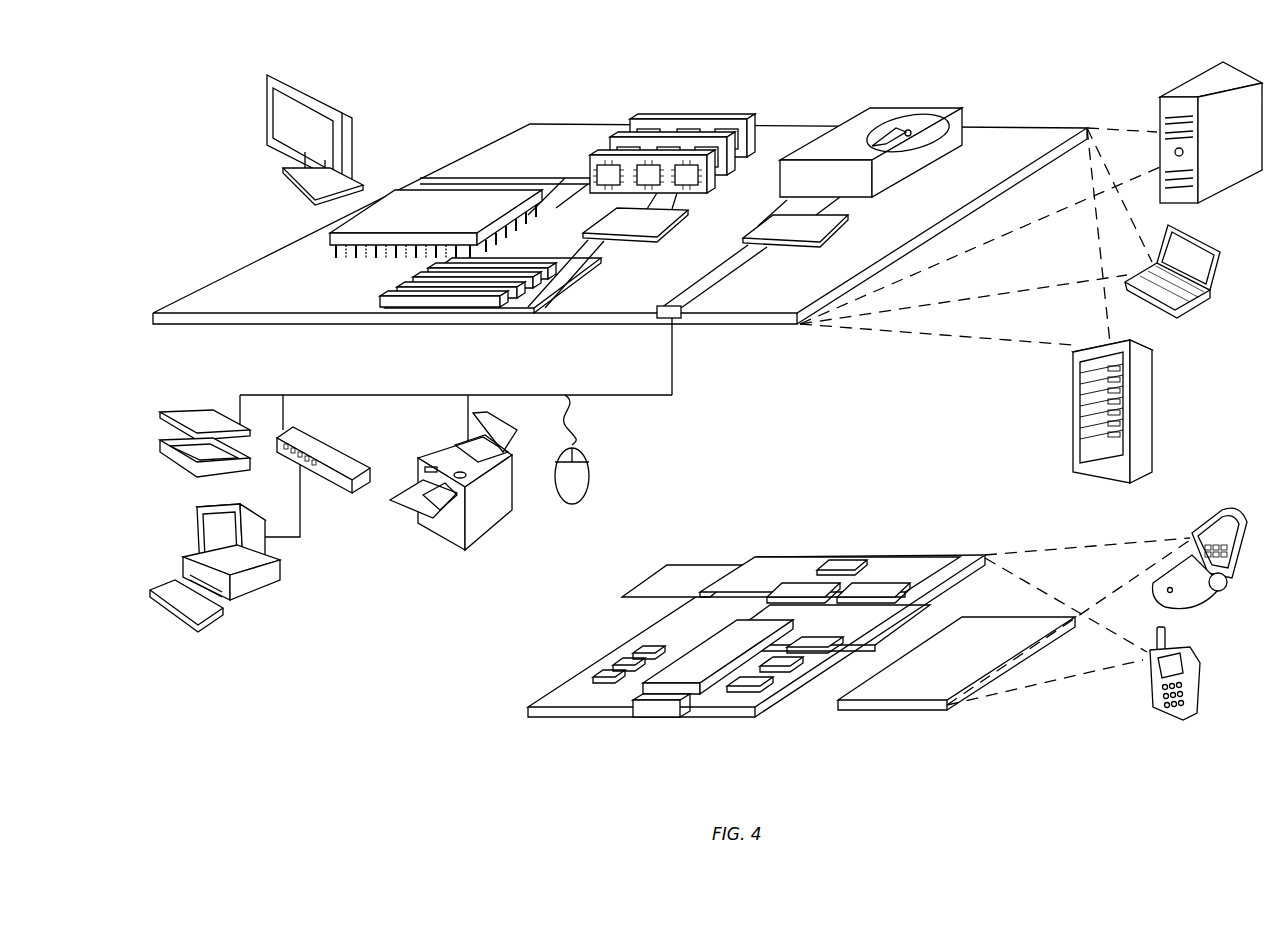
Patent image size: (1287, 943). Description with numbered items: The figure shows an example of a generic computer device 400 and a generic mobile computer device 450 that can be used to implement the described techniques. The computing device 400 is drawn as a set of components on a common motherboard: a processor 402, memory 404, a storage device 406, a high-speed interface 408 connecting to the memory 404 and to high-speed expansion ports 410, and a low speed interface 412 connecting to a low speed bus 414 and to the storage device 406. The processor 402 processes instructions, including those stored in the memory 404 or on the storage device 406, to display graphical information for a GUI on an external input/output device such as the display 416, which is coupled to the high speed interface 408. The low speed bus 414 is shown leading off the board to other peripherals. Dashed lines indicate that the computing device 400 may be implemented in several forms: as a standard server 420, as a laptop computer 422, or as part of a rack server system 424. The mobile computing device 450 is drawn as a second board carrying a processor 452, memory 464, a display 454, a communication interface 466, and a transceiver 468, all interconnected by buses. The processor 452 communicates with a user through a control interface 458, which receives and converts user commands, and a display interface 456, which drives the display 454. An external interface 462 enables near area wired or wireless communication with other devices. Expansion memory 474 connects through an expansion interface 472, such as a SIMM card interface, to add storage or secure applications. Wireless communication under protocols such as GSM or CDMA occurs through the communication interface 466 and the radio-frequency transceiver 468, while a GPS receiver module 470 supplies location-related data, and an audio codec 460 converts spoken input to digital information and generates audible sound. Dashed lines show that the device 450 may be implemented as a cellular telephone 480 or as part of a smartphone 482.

The computing device 400 is at (450, 94).
The processor 402 is at (337, 237).
The memory 404 is at (648, 120).
The storage device 406 is at (866, 110).
The high-speed interface 408 is at (583, 233).
The high-speed expansion ports 410 is at (392, 288).
The low speed interface 412 is at (773, 235).
The low speed bus 414 is at (683, 320).
The display 416 is at (270, 80).
The standard server 420 is at (1160, 110).
The laptop computer 422 is at (1222, 250).
The rack server system 424 is at (1075, 440).
The mobile computing device 450 is at (494, 724).
The processor 452 is at (693, 687).
The display 454 is at (930, 700).
The display interface 456 is at (768, 692).
The control interface 458 is at (786, 672).
The audio codec 460 is at (812, 653).
The external interface 462 is at (660, 705).
The memory 464 is at (612, 672).
The communication interface 466 is at (805, 583).
The transceiver 468 is at (878, 583).
The GPS receiver module 470 is at (850, 560).
The expansion interface 472 is at (740, 566).
The expansion memory 474 is at (672, 566).
The cellular telephone 480 is at (1192, 522).
The smartphone 482 is at (1150, 682).